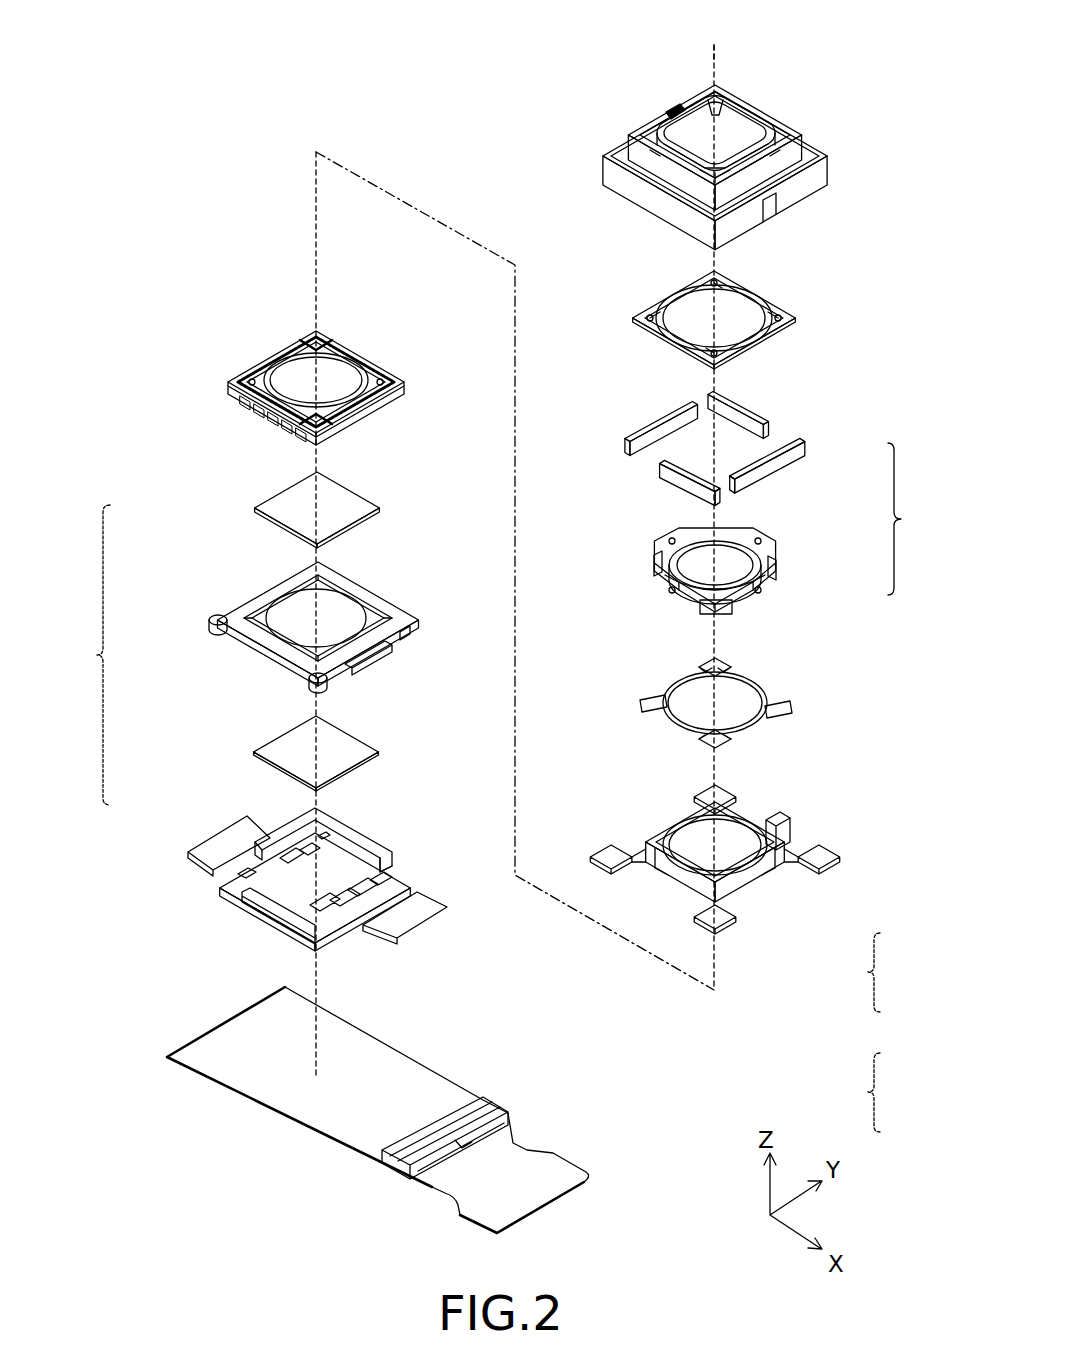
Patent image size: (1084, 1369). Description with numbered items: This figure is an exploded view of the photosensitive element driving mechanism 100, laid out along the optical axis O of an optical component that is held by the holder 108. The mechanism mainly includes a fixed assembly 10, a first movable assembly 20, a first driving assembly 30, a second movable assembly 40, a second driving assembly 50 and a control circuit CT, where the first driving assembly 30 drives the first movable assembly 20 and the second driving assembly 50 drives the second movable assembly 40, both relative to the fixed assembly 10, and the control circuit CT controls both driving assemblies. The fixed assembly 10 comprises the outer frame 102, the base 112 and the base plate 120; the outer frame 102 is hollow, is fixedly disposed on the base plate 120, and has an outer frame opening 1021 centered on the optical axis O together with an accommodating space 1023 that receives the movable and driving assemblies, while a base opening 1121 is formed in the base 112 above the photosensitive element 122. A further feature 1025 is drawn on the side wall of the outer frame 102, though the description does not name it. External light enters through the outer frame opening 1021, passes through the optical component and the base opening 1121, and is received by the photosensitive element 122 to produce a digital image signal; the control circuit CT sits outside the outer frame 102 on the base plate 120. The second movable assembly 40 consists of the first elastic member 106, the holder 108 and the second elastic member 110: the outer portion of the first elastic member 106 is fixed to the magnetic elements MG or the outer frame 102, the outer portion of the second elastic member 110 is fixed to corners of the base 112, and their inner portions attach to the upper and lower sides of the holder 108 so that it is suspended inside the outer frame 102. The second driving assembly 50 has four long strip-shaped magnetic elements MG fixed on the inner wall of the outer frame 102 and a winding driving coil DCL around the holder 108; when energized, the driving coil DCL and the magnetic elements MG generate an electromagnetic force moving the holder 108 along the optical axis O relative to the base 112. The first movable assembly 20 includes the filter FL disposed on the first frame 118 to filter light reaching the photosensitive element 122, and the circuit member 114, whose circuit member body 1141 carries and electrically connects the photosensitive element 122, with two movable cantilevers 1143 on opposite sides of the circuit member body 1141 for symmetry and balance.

The photosensitive element driving mechanism 100 is at (162, 28).
The optical axis O is at (712, 39).
The fixed assembly 10 is at (881, 972).
The first movable assembly 20 is at (87, 655).
The first driving assembly 30 is at (268, 346).
The second movable assembly 40 is at (881, 1092).
The second driving assembly 50 is at (911, 519).
The outer frame 102 is at (822, 188).
The outer frame opening 1021 is at (712, 100).
The accommodating space 1023 is at (676, 115).
The housing notch 1025 is at (770, 208).
The first elastic member 106 is at (768, 300).
The holder 108 is at (672, 552).
The second elastic member 110 is at (752, 682).
The base 112 is at (668, 830).
The base opening 1121 is at (750, 830).
The circuit member 114 is at (206, 830).
The circuit member body 1141 is at (398, 880).
The movable cantilever 1143 is at (362, 830).
The first frame 118 is at (255, 612).
The base plate 120 is at (208, 1042).
The photosensitive element 122 is at (285, 750).
The filter FL is at (270, 510).
The magnetic element MG is at (672, 420).
The driving coil DCL is at (785, 580).
The control circuit CT is at (500, 1152).